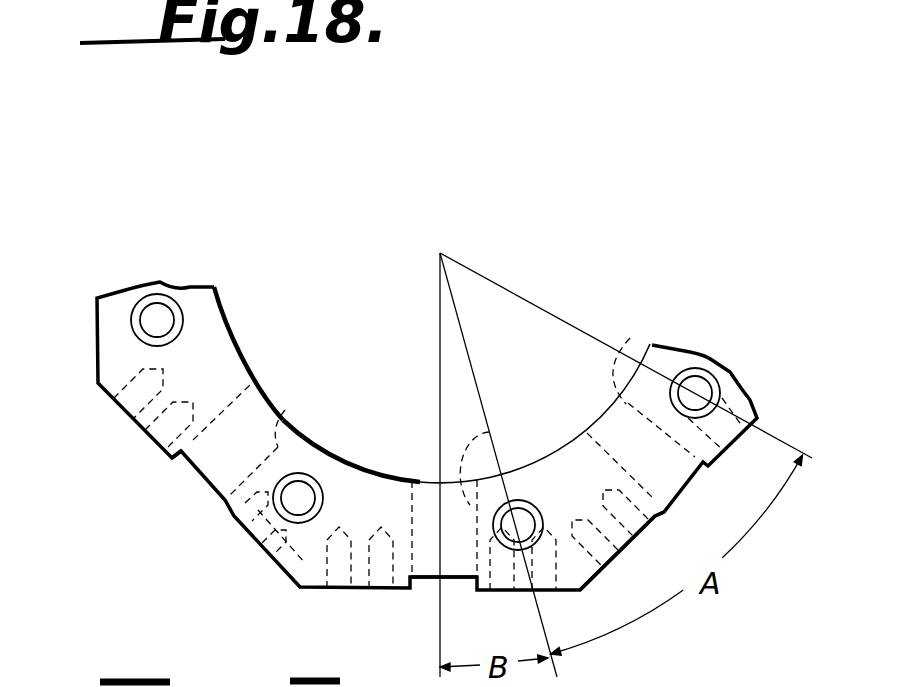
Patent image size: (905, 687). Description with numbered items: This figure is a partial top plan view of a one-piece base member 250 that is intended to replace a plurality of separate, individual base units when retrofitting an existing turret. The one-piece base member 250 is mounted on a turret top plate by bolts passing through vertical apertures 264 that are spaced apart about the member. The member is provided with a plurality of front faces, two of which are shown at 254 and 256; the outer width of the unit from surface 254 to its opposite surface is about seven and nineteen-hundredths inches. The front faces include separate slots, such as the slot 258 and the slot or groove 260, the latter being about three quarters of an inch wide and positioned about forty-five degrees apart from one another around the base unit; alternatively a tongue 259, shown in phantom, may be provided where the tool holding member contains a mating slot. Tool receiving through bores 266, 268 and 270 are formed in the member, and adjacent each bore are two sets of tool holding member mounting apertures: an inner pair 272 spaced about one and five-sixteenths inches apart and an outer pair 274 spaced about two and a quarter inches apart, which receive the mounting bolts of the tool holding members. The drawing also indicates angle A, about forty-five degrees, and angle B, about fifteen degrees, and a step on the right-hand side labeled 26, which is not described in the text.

The one-piece base member 250 is at (241, 338).
The front face 254 is at (355, 592).
The front face 256 is at (631, 551).
The slot 258 is at (226, 503).
The tongue 259 is at (425, 595).
The slot 260 is at (479, 584).
The vertical apertures 264 is at (303, 504).
The tool receiving bore 266 is at (283, 416).
The tool receiving bore 268 is at (557, 451).
The tool receiving bore 270 is at (672, 378).
The inner pair of apertures 272 is at (162, 445).
The outer pair of apertures 274 is at (112, 400).
The shoulder 26 is at (669, 498).